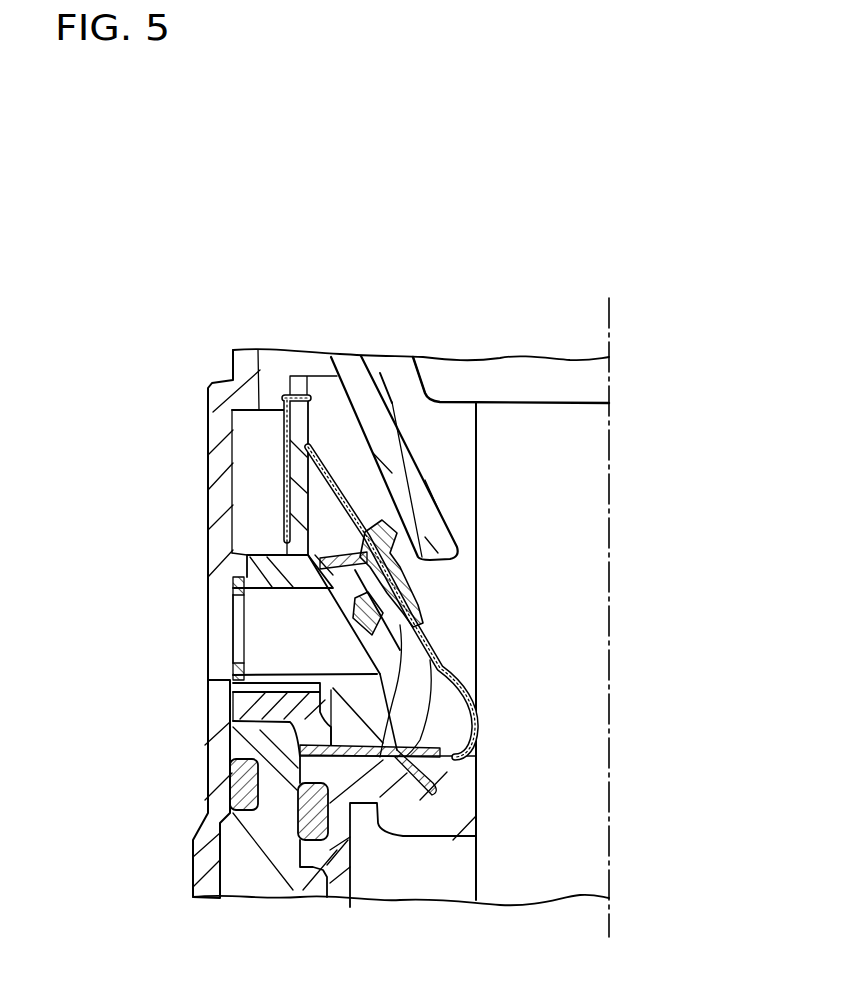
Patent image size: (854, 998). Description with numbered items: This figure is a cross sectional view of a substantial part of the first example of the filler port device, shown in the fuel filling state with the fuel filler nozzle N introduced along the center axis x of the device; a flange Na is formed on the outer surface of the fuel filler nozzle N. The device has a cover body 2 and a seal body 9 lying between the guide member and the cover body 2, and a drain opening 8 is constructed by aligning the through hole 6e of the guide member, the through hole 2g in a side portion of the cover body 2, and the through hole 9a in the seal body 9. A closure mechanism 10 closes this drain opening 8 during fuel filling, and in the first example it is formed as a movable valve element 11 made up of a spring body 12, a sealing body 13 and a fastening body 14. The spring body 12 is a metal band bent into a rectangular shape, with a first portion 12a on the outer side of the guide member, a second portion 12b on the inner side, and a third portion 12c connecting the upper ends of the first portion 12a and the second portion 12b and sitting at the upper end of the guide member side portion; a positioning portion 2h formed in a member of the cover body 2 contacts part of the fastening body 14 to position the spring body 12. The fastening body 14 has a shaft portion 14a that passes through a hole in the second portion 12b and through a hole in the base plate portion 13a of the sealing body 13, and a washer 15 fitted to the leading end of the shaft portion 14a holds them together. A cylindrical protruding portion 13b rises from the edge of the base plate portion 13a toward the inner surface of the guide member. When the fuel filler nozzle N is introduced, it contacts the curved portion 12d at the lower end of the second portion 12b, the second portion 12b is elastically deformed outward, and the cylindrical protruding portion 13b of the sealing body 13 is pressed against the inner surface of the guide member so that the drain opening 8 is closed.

The cover body 2 is at (207, 392).
The through hole 2g is at (217, 593).
The positioning portion 2h is at (440, 513).
The through hole 6e is at (243, 630).
The drain opening 8 is at (337, 590).
The seal body 9 is at (240, 576).
The through hole 9a is at (237, 613).
The closure mechanism 10 is at (473, 697).
The movable valve element 11 is at (440, 690).
The spring body 12 is at (326, 470).
The first portion 12a is at (283, 444).
The second portion 12b is at (432, 662).
The third portion 12c is at (300, 395).
The curved portion 12d is at (480, 730).
The sealing body 13 is at (425, 700).
The base plate portion 13a is at (400, 577).
The cylindrical protruding portion 13b is at (410, 660).
The fastening body 14 is at (447, 600).
The shaft portion 14a is at (232, 705).
The washer 15 is at (262, 653).
The fuel filler nozzle N is at (580, 610).
The flange Na is at (537, 373).
The center axis x is at (612, 298).